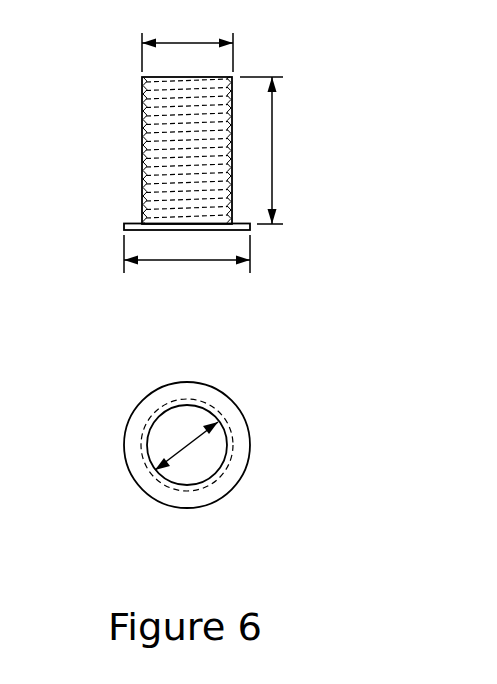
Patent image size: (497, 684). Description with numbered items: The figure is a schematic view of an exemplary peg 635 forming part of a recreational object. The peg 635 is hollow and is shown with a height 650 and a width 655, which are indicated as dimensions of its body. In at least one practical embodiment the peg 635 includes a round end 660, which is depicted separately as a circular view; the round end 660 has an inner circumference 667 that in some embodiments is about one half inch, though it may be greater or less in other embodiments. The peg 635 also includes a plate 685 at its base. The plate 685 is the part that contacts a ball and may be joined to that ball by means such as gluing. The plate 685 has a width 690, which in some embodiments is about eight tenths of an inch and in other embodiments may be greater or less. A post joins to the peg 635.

The peg 635 is at (88, 136).
The width 655 is at (190, 42).
The height 650 is at (272, 150).
The plate 685 is at (251, 226).
The width 690 is at (190, 262).
The round end 660 is at (213, 388).
The inner circumference 667 is at (188, 447).